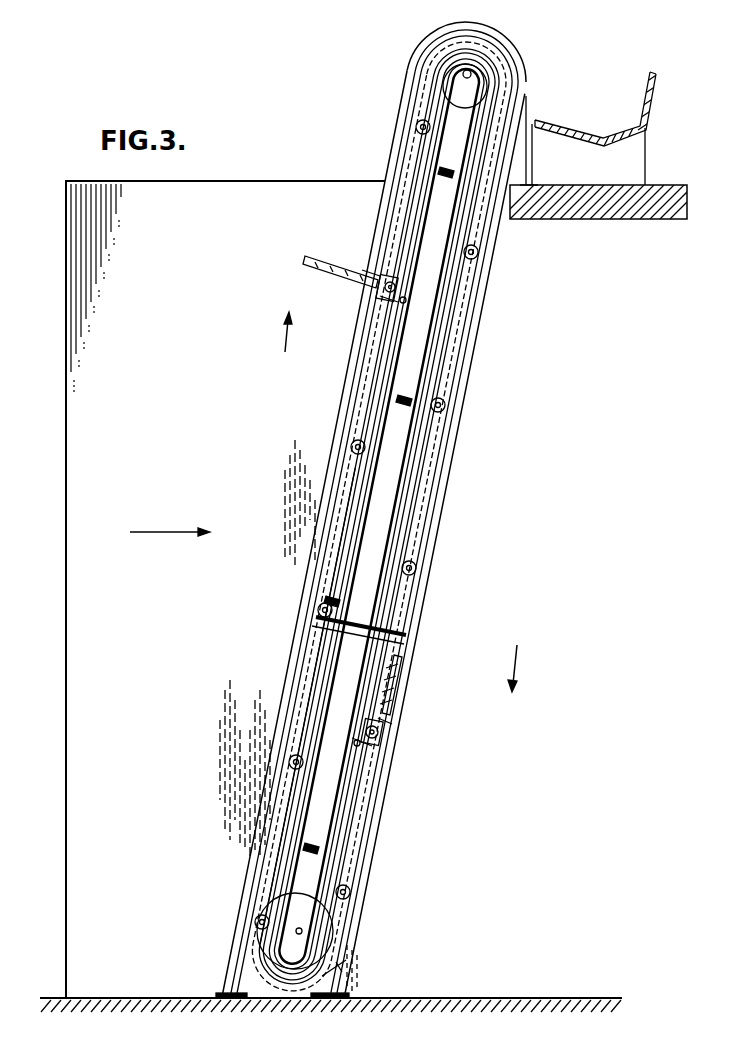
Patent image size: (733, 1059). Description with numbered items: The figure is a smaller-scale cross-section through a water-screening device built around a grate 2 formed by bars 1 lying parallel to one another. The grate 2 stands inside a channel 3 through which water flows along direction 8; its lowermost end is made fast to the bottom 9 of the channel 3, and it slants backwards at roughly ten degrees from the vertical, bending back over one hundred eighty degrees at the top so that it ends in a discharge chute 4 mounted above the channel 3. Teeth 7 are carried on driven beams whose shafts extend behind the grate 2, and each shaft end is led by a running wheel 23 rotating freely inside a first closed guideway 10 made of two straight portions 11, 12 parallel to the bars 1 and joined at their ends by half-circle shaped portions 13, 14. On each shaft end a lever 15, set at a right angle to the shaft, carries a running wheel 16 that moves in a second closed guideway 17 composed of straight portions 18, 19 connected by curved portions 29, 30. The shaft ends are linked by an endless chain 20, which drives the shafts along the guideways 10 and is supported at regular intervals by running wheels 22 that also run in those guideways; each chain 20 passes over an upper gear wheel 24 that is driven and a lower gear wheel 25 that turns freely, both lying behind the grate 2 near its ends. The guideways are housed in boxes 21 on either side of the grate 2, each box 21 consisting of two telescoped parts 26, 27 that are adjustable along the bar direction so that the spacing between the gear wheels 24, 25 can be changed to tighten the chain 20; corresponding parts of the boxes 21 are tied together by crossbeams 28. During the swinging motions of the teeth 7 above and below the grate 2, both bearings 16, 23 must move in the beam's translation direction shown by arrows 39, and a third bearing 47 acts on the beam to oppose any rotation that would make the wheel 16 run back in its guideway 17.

The bars 1 is at (430, 43).
The grate 2 is at (404, 82).
The channel 3 is at (112, 609).
The discharge chute 4 is at (571, 133).
The teeth 7 is at (360, 272).
The direction of water flow 8 is at (148, 532).
The bottom 9 is at (195, 998).
The first closed guideway 10 is at (362, 822).
The straight portion 11 is at (280, 833).
The straight portion 12 is at (357, 845).
The half-circle shaped portion 13 is at (512, 90).
The half-circle shaped portion 14 is at (340, 965).
The lever 15 is at (384, 296).
The running wheel 16 is at (405, 299).
The second closed guideway 17 is at (300, 878).
The straight portion 18 is at (302, 810).
The straight portion 19 is at (351, 790).
The endless chain 20 is at (386, 394).
The box 21 is at (419, 567).
The running wheel 22 is at (480, 253).
The running wheel 23 is at (386, 275).
The gear wheel 24 is at (462, 112).
The gear wheel 25 is at (332, 931).
The box part 26 is at (470, 338).
The box part 27 is at (412, 670).
The crossbeams 28 is at (442, 170).
The curved portion 29 is at (470, 76).
The curved portion 30 is at (300, 1000).
The arrows 39 is at (283, 340).
The third bearing 47 is at (378, 270).